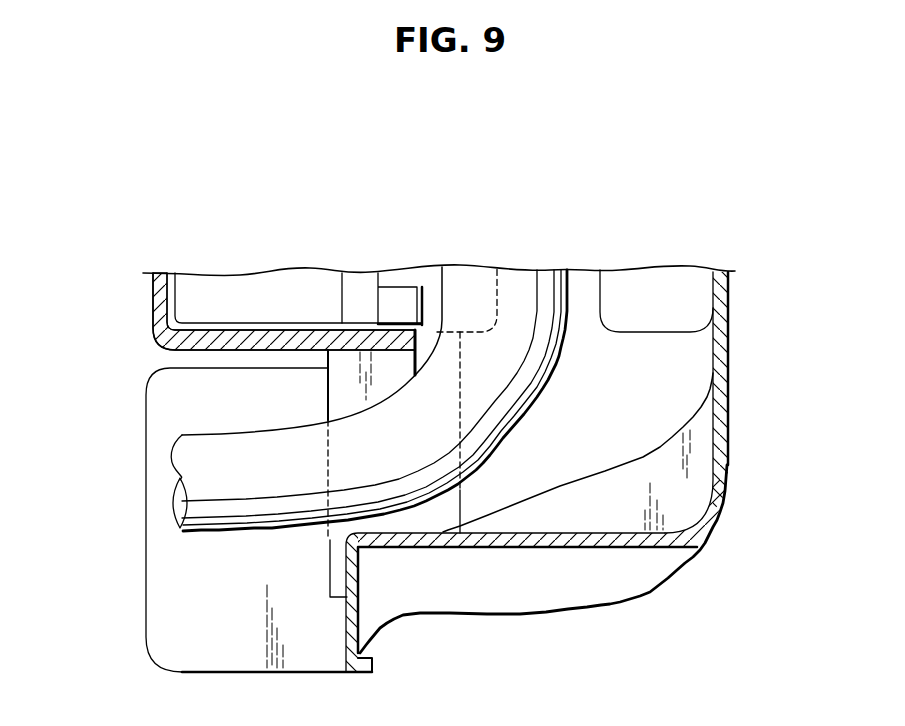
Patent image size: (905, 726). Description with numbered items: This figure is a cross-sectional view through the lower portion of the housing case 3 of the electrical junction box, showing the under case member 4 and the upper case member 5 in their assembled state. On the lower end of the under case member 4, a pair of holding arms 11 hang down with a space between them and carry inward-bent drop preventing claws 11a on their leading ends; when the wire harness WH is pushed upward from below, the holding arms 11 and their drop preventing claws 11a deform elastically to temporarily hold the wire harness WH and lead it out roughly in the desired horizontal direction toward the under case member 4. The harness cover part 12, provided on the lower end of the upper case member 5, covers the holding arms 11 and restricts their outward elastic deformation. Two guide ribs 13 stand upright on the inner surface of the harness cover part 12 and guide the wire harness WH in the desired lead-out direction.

The housing case 3 is at (587, 193).
The under case member 4 is at (360, 266).
The upper case member 5 is at (584, 263).
The holding arms 11 is at (343, 400).
The drop preventing claws 11a is at (337, 573).
The wire harness WH is at (212, 491).
The harness cover part 12 is at (720, 420).
The guide ribs 13 is at (663, 492).